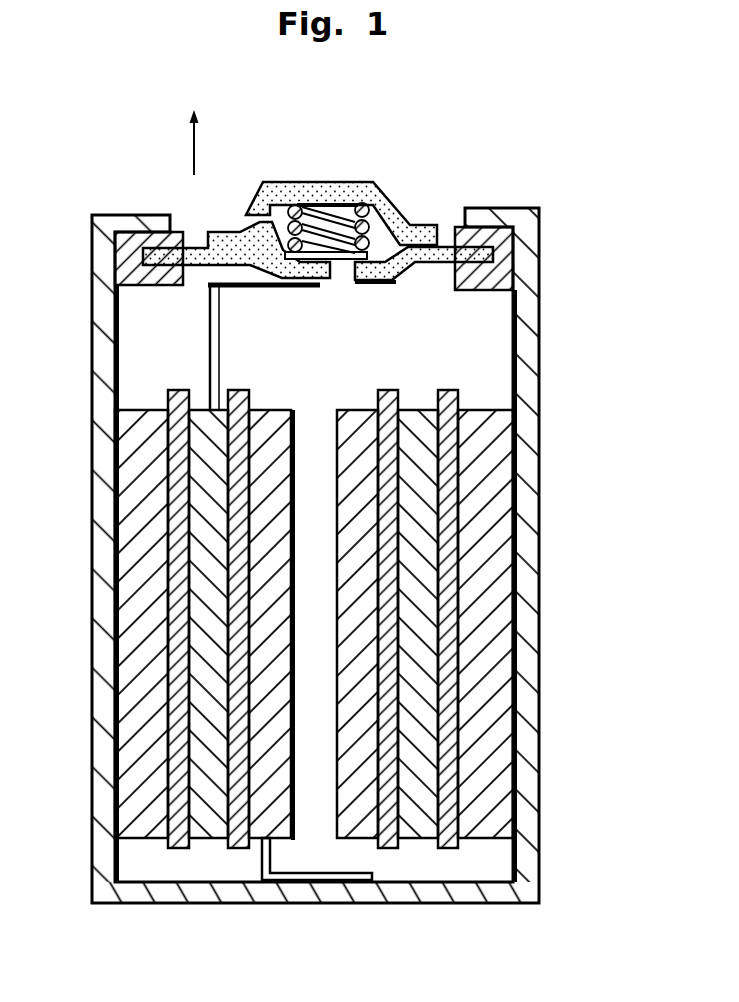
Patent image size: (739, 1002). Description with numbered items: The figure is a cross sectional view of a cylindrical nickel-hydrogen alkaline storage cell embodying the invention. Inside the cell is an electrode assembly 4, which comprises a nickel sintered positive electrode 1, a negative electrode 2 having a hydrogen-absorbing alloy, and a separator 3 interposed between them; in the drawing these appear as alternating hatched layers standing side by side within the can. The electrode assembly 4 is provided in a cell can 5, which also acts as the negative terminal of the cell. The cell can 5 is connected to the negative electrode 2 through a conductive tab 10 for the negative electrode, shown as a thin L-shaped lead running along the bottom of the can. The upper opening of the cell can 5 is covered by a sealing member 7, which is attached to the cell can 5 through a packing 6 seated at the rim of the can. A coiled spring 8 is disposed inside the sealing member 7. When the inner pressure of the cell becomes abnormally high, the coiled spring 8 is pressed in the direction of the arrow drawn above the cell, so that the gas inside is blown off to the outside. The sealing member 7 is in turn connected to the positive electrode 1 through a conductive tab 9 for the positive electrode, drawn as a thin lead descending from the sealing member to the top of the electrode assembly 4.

The nickel sintered positive electrode 1 is at (422, 657).
The negative electrode 2 is at (483, 577).
The separator 3 is at (600, 659).
The electrode assembly 4 is at (378, 619).
The cell can 5 is at (523, 777).
The packing 6 is at (453, 228).
The sealing member 7 is at (352, 182).
The coiled spring 8 is at (318, 203).
The conductive tab for the positive electrode 9 is at (212, 342).
The conductive tab for the negative electrode 10 is at (275, 851).